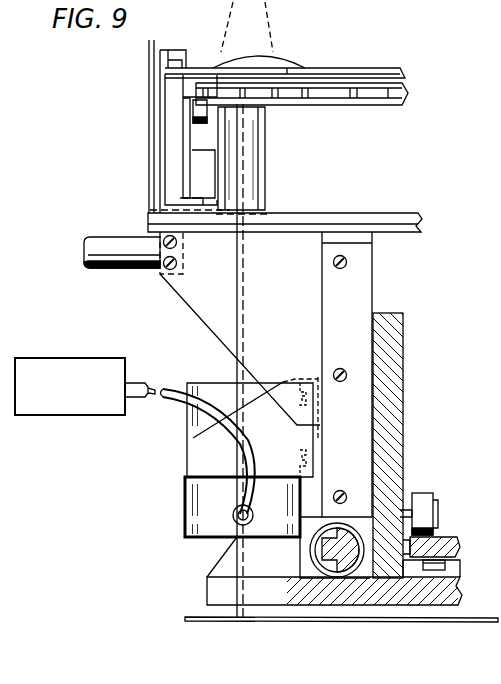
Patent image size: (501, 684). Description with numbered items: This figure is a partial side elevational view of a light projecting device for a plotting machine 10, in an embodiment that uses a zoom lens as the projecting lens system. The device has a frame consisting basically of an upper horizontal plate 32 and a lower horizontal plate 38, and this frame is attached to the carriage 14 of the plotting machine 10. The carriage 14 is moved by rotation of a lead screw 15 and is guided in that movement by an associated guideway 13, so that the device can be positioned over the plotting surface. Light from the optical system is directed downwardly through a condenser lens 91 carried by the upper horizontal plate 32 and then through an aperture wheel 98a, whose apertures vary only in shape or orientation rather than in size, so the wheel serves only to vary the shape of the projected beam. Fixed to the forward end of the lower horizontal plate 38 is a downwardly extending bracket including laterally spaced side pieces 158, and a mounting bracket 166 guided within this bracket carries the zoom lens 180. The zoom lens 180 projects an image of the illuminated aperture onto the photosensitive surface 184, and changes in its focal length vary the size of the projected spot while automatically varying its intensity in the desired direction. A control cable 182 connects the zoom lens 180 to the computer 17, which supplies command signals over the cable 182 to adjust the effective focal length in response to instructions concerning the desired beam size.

The plotting machine 10 is at (168, 80).
The guideway 13 is at (444, 540).
The carriage 14 is at (405, 400).
The lead screw 15 is at (322, 547).
The computer 17 is at (40, 358).
The upper horizontal plate 32 is at (190, 62).
The lower horizontal plate 38 is at (333, 213).
The condenser lens 91 is at (272, 63).
The aperture wheel 98a is at (333, 104).
The side piece 158 is at (196, 313).
The mounting bracket 166 is at (185, 466).
The zoom lens 180 is at (185, 430).
The control cable 182 is at (180, 390).
The photosensitive surface 184 is at (197, 613).